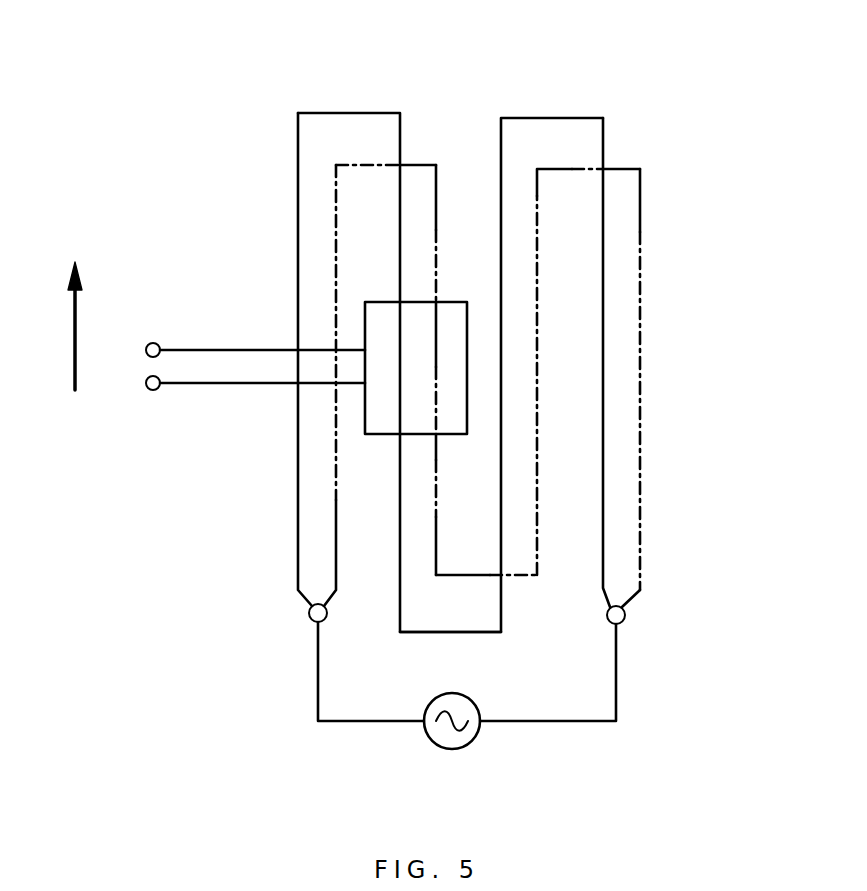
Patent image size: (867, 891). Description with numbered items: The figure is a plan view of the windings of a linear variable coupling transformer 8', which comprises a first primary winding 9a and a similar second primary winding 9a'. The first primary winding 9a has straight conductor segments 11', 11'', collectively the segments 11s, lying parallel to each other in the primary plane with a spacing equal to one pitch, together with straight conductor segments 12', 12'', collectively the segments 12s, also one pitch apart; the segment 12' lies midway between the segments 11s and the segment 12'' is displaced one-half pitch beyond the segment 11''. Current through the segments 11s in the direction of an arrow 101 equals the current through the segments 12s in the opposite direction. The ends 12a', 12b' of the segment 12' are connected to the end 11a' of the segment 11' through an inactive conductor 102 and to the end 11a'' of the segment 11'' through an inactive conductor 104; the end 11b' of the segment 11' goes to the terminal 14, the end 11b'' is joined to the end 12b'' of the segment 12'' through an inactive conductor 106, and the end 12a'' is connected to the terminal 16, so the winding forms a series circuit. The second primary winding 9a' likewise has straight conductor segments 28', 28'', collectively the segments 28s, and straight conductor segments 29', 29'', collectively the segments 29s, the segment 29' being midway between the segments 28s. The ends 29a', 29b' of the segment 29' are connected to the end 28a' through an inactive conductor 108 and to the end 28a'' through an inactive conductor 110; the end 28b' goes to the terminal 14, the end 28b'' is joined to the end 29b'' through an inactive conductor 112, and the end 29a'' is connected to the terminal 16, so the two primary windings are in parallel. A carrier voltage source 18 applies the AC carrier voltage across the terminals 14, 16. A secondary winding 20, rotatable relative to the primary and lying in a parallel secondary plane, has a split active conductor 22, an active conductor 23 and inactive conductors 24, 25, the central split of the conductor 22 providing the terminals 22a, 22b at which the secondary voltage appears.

The linear variable coupling transformer 8' is at (700, 271).
The first primary winding 9a is at (282, 76).
The second primary winding 9a' is at (276, 194).
The straight conductor segment 11' is at (421, 372).
The straight conductor segment 11'' is at (528, 362).
The segments 11s is at (501, 125).
The end of segment 11a' is at (328, 129).
The end of segment 11a'' is at (533, 648).
The end of segment 11b' is at (263, 573).
The end of segment 11b'' is at (535, 133).
The straight conductor segment 12' is at (423, 113).
The straight conductor segment 12'' is at (659, 228).
The segments 12s is at (400, 605).
The end of segment 12a' is at (378, 140).
The end of segment 12a'' is at (664, 562).
The end of segment 12b' is at (366, 640).
The end of segment 12b'' is at (648, 113).
The terminal 14 is at (308, 612).
The terminal 16 is at (630, 617).
The carrier voltage source 18 is at (478, 742).
The secondary winding 20 is at (452, 285).
The split active conductor 22 is at (367, 410).
The terminal 22a is at (158, 342).
The terminal 22b is at (155, 390).
The active conductor 23 is at (465, 387).
The inactive conductor 24 is at (382, 435).
The inactive conductor 25 is at (390, 302).
The straight conductor segment 28' is at (380, 385).
The straight conductor segment 28'' is at (570, 372).
The segments 28s is at (337, 240).
The end of segment 28a' is at (370, 192).
The end of segment 28a'' is at (568, 561).
The end of segment 28b' is at (363, 576).
The end of segment 28b'' is at (570, 189).
The straight conductor segment 29' is at (459, 370).
The straight conductor segment 29'' is at (676, 388).
The segments 29s is at (725, 497).
The end of segment 29a' is at (468, 191).
The end of segment 29a'' is at (685, 581).
The end of segment 29b' is at (459, 548).
The end of segment 29b'' is at (696, 173).
The arrow 101 is at (78, 304).
The inactive conductor 102 is at (354, 113).
The inactive conductor 104 is at (417, 633).
The inactive conductor 106 is at (547, 118).
The inactive conductor 108 is at (372, 170).
The inactive conductor 110 is at (453, 577).
The inactive conductor 112 is at (625, 168).